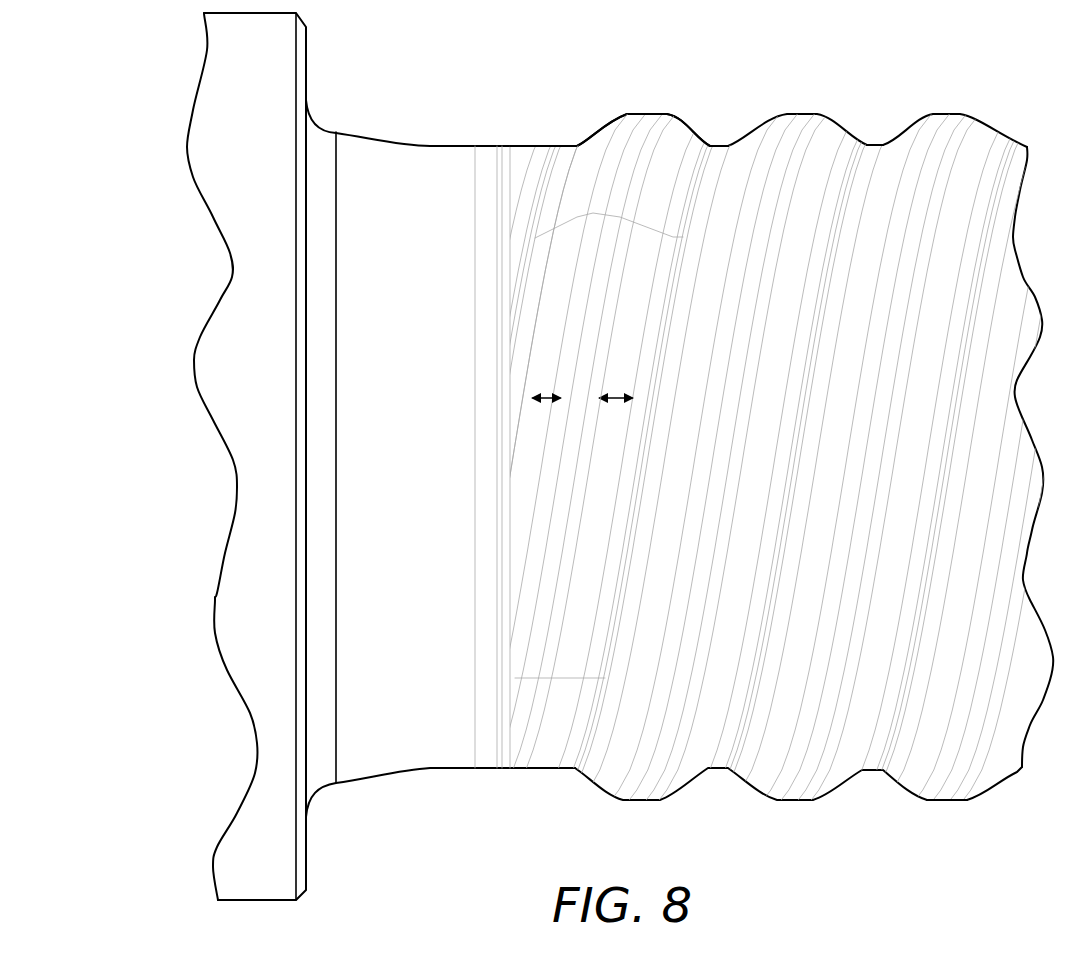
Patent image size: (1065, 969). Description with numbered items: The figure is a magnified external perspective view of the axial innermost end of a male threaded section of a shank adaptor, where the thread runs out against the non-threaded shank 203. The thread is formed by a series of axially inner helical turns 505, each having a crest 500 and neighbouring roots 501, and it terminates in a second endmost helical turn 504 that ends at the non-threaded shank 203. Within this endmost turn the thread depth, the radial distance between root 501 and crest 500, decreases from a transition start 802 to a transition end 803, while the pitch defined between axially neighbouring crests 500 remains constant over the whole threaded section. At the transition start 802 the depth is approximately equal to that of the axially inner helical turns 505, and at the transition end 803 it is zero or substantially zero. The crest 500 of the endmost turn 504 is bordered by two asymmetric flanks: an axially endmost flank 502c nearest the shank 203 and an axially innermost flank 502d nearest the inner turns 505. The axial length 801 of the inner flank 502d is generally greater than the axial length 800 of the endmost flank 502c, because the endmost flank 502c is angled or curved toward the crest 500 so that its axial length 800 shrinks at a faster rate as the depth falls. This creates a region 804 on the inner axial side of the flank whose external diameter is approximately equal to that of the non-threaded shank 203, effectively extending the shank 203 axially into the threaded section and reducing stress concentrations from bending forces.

The non-threaded shank 203 is at (391, 500).
The crest 500 is at (640, 114).
The root 501 is at (580, 144).
The axially endmost flank 502c is at (557, 270).
The axially innermost flank 502d is at (580, 613).
The second endmost helical turn 504 is at (668, 97).
The axially inner helical turns 505 is at (950, 810).
The axial length of endmost flank 800 is at (548, 395).
The axial length of inner flank 801 is at (615, 403).
The transition start 802 is at (593, 212).
The transition end 803 is at (568, 678).
The region 804 is at (515, 527).